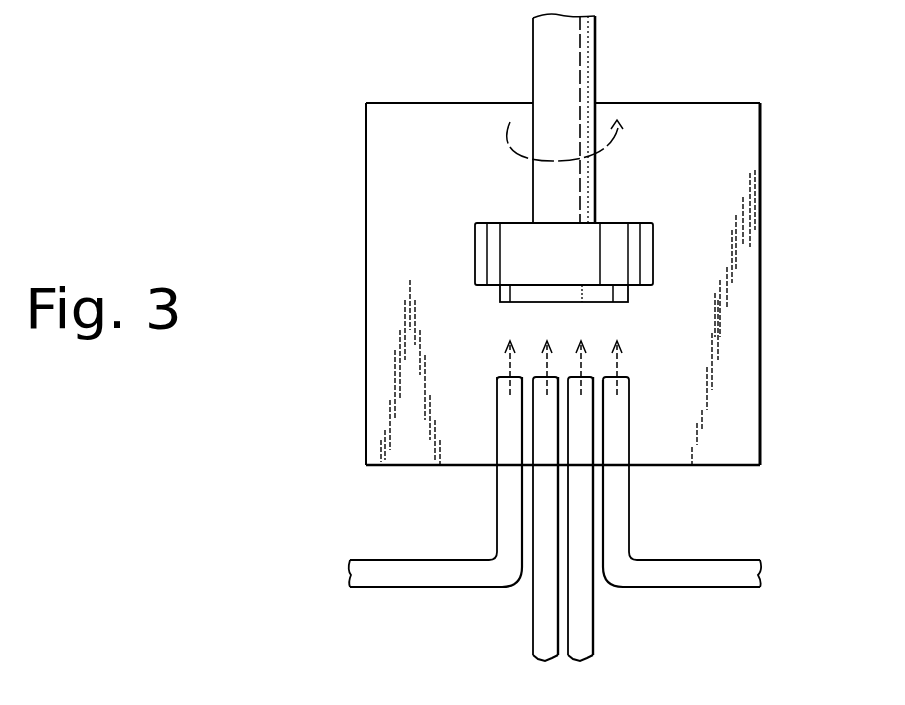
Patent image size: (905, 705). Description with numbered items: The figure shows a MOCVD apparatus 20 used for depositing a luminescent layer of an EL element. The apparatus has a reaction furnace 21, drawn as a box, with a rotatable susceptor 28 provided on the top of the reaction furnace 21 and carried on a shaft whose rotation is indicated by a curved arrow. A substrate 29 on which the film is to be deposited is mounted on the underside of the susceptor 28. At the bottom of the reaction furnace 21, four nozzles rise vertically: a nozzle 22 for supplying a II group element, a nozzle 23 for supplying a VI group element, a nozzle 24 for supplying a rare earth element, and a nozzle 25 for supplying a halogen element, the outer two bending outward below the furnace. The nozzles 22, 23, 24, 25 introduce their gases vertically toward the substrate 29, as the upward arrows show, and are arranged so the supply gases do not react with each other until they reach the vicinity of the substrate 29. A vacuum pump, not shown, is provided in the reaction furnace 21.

The MOCVD apparatus 20 is at (447, 71).
The reaction furnace 21 is at (760, 137).
The nozzle for supplying a II group element 22 is at (593, 622).
The nozzle for supplying a VI group element 23 is at (534, 627).
The nozzle for supplying a rare earth element 24 is at (727, 578).
The nozzle for supplying a halogen element 25 is at (373, 574).
The rotatable susceptor 28 is at (653, 252).
The substrate 29 is at (640, 295).